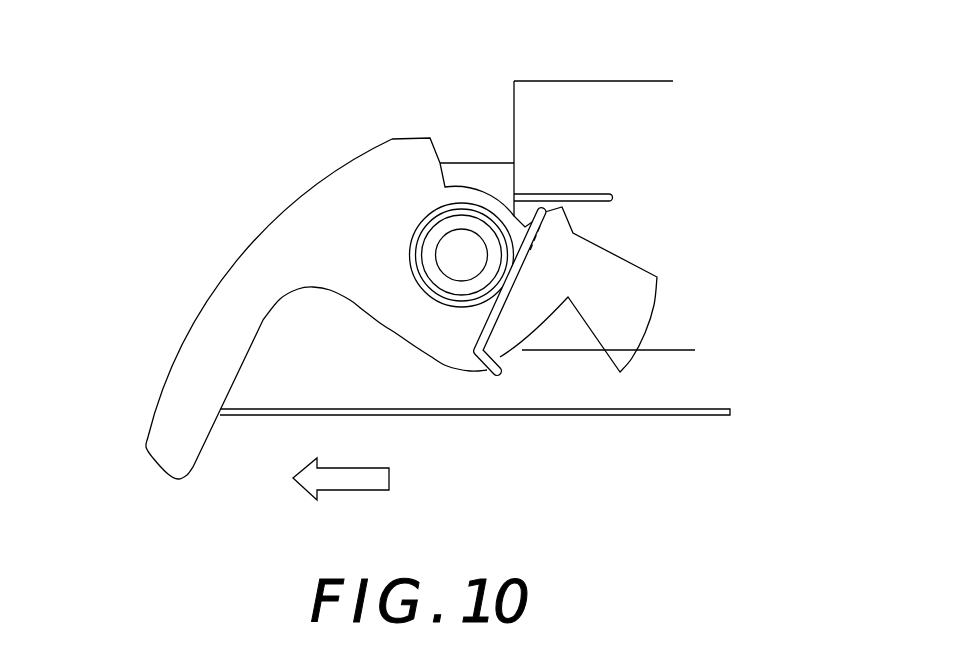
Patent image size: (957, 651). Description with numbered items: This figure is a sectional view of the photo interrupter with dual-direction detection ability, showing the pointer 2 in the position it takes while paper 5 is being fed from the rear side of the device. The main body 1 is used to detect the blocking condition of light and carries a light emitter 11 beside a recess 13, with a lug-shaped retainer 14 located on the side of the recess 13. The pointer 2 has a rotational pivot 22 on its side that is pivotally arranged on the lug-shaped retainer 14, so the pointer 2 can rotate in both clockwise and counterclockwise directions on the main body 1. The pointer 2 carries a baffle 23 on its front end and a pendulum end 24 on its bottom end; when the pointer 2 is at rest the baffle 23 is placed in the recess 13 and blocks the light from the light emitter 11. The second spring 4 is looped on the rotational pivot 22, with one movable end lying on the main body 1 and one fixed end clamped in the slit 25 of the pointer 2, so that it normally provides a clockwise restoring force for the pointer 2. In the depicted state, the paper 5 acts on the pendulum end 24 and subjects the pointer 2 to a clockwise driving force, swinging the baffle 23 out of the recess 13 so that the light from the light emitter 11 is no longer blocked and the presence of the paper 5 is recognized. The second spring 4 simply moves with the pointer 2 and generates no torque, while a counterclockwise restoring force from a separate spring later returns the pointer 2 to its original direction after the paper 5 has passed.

The main body 1 is at (611, 82).
The pointer 2 is at (303, 203).
The second spring 4 is at (465, 307).
The paper 5 is at (500, 416).
The light emitter 11 is at (612, 197).
The recess 13 is at (552, 98).
The lug-shaped retainer 14 is at (477, 170).
The rotational pivot 22 is at (433, 271).
The baffle 23 is at (640, 317).
The pendulum end 24 is at (155, 430).
The slit 25 is at (441, 170).